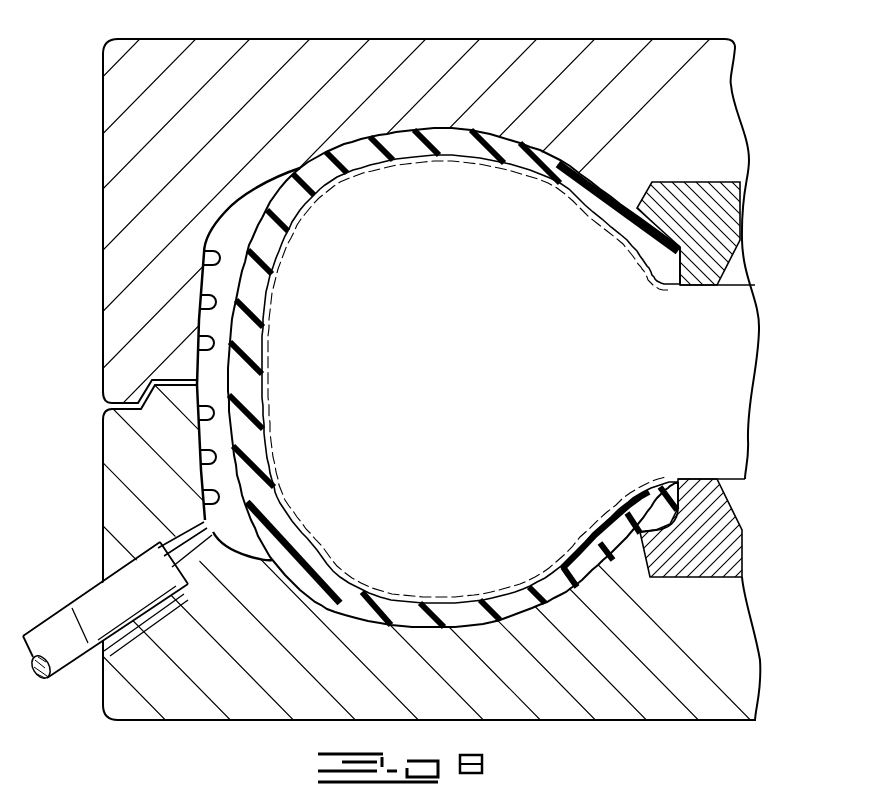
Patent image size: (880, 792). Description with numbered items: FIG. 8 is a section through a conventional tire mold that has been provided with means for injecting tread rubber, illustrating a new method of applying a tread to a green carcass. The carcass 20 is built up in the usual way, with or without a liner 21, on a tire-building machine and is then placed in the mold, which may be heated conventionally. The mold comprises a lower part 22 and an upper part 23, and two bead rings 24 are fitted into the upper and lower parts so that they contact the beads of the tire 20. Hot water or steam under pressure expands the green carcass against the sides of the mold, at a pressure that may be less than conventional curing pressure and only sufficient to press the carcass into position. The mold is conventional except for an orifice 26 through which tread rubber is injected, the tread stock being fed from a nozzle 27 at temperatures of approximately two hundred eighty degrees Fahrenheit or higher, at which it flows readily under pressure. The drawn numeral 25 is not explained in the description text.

The carcass 20 is at (323, 570).
The liner 21 is at (510, 587).
The lower part 22 is at (263, 712).
The upper part 23 is at (599, 50).
The bead rings 24 is at (745, 212).
The vent gap with grooves 25 is at (232, 250).
The orifice 26 is at (192, 533).
The nozzle 27 is at (72, 668).